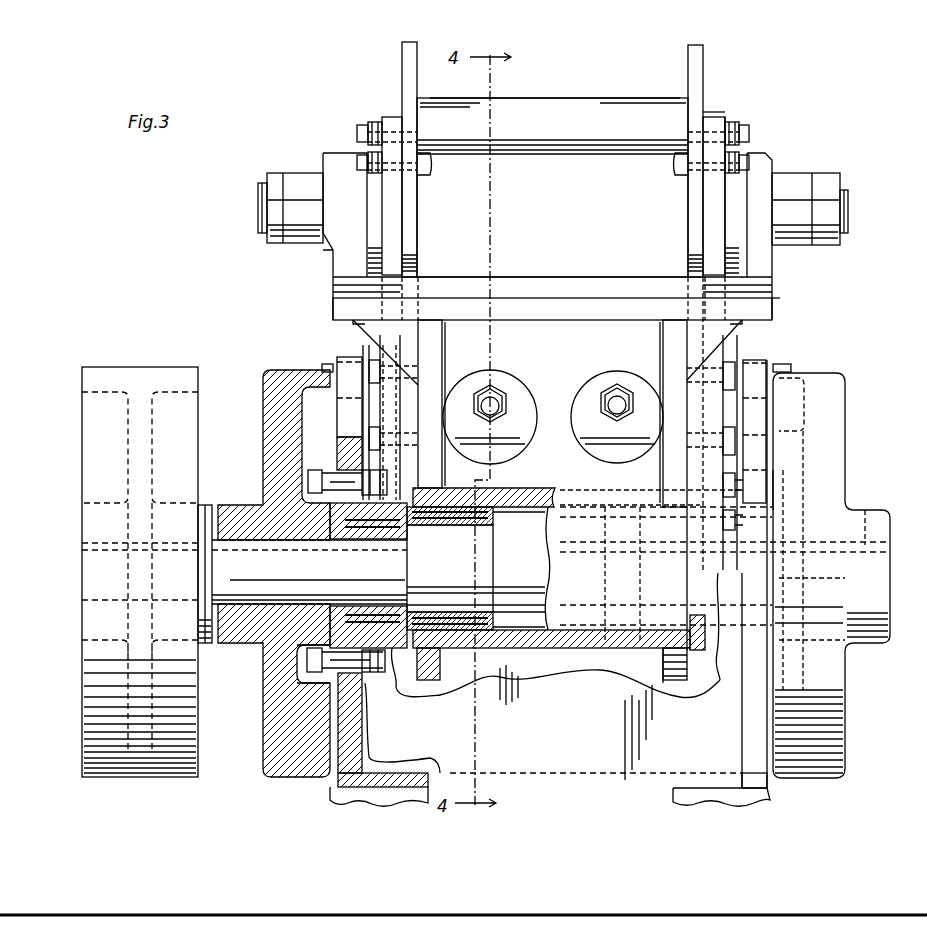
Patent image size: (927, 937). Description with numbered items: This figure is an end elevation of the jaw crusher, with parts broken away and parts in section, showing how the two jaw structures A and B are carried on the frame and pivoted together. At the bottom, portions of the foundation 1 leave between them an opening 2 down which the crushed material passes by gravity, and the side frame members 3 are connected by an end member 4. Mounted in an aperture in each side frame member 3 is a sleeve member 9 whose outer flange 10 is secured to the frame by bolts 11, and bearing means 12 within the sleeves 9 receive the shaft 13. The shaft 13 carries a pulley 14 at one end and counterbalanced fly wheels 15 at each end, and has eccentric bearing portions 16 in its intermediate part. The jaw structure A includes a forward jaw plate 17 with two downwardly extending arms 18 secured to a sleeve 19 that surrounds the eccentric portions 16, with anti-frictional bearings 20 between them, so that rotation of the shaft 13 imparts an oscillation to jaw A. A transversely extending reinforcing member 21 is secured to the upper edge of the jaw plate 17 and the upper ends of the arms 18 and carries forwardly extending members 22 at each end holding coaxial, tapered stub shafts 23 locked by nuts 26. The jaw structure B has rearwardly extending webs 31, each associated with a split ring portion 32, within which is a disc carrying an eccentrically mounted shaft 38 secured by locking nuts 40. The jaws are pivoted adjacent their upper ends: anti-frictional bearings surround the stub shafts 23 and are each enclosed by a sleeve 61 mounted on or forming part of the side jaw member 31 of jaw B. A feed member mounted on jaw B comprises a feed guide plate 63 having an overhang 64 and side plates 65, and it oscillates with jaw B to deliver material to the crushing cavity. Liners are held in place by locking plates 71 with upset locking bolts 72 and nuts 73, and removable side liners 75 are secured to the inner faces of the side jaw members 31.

The foundation portions 1 is at (342, 800).
The opening 2 is at (572, 790).
The side frame members 3 is at (338, 776).
The end member 4 is at (652, 762).
The sleeve member 9 is at (397, 690).
The outer flange 10 is at (310, 680).
The bolts 11 is at (320, 470).
The bearing means 12 is at (370, 618).
The shaft 13 is at (257, 598).
The pulley 14 is at (140, 778).
The counterbalanced fly wheels 15 is at (263, 394).
The eccentric bearing portions 16 is at (457, 648).
The forward jaw plate 17 is at (540, 335).
The downwardly extending arms 18 is at (442, 338).
The sleeve 19 is at (530, 490).
The anti-frictional bearings 20 is at (450, 520).
The transversely extending reinforcing member 21 is at (762, 308).
The forwardly extending members 22 is at (334, 158).
The stub shafts 23 is at (258, 195).
The nuts 26 is at (296, 182).
The rearwardly extending webs 31 is at (362, 366).
The split ring portion 32 is at (385, 360).
The shaft 38 is at (845, 382).
The locking nuts 40 is at (326, 370).
The sleeve 61 is at (372, 252).
The feed guide plate 63 is at (610, 175).
The overhang 64 is at (572, 108).
The side plates 65 is at (402, 52).
The locking plates 71 is at (497, 386).
The upset locking bolts 72 is at (506, 412).
The nuts 73 is at (498, 402).
The removable side liners 75 is at (420, 398).
The jaw structure A is at (778, 298).
The jaw structure B is at (720, 114).